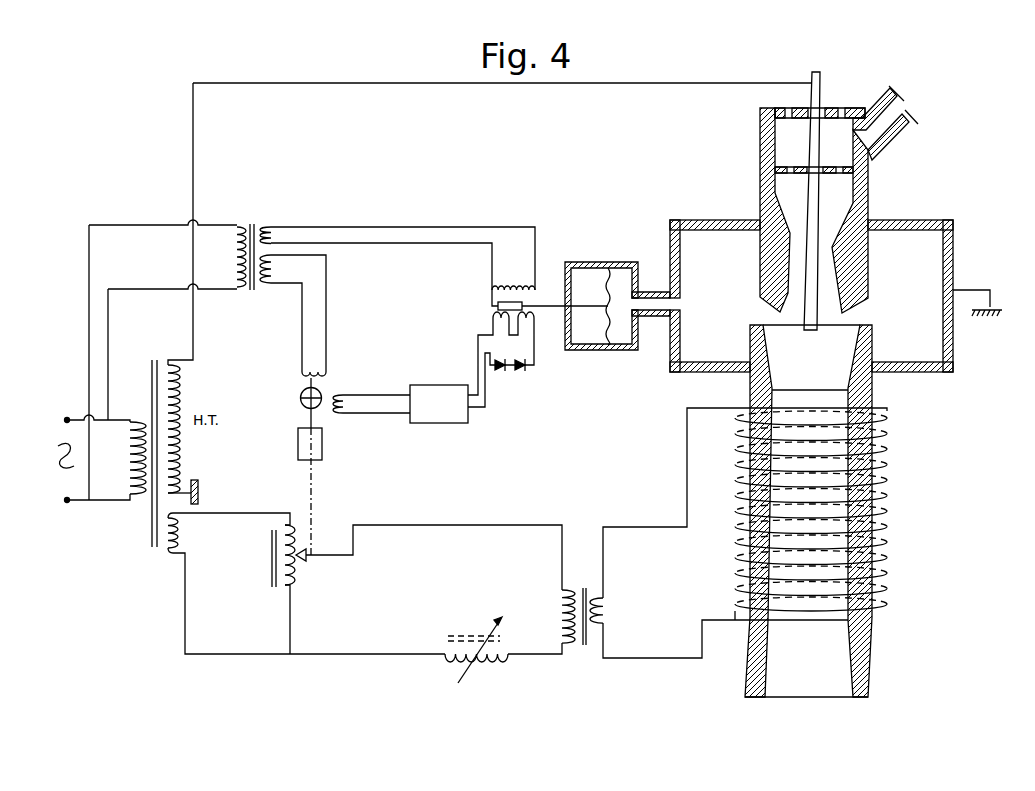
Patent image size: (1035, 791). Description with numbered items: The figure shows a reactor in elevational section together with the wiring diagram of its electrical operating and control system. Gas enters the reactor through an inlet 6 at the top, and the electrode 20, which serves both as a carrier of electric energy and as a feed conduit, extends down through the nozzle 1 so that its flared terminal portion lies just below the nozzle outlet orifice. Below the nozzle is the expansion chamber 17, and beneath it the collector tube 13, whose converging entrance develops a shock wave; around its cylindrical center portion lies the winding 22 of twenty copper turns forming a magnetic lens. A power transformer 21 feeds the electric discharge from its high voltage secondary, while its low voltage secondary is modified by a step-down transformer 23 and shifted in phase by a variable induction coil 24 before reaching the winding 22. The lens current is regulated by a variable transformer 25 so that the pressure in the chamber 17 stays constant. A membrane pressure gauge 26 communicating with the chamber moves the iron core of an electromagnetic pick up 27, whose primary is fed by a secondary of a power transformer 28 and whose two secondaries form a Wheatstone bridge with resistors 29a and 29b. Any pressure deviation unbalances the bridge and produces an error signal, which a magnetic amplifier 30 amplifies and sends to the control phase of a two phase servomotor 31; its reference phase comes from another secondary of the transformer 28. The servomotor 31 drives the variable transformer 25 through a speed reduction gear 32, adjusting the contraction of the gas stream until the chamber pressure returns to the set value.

The nozzle 1 is at (878, 177).
The gas inlet 6 is at (890, 108).
The collector tube 13 is at (872, 392).
The expansion chamber 17 is at (935, 263).
The electrode 20 is at (810, 212).
The power transformer 21 is at (180, 382).
The winding 22 is at (887, 458).
The step-down transformer 23 is at (603, 605).
The variable induction coil 24 is at (495, 665).
The variable transformer 25 is at (298, 570).
The membrane pressure gauge 26 is at (622, 350).
The electromagnetic pick up 27 is at (492, 306).
The power transformer 28 is at (251, 224).
The resistor 29a is at (500, 371).
The resistor 29b is at (522, 371).
The magnetic amplifier 30 is at (437, 423).
The two phase servomotor 31 is at (318, 391).
The speed reduction gear 32 is at (322, 444).